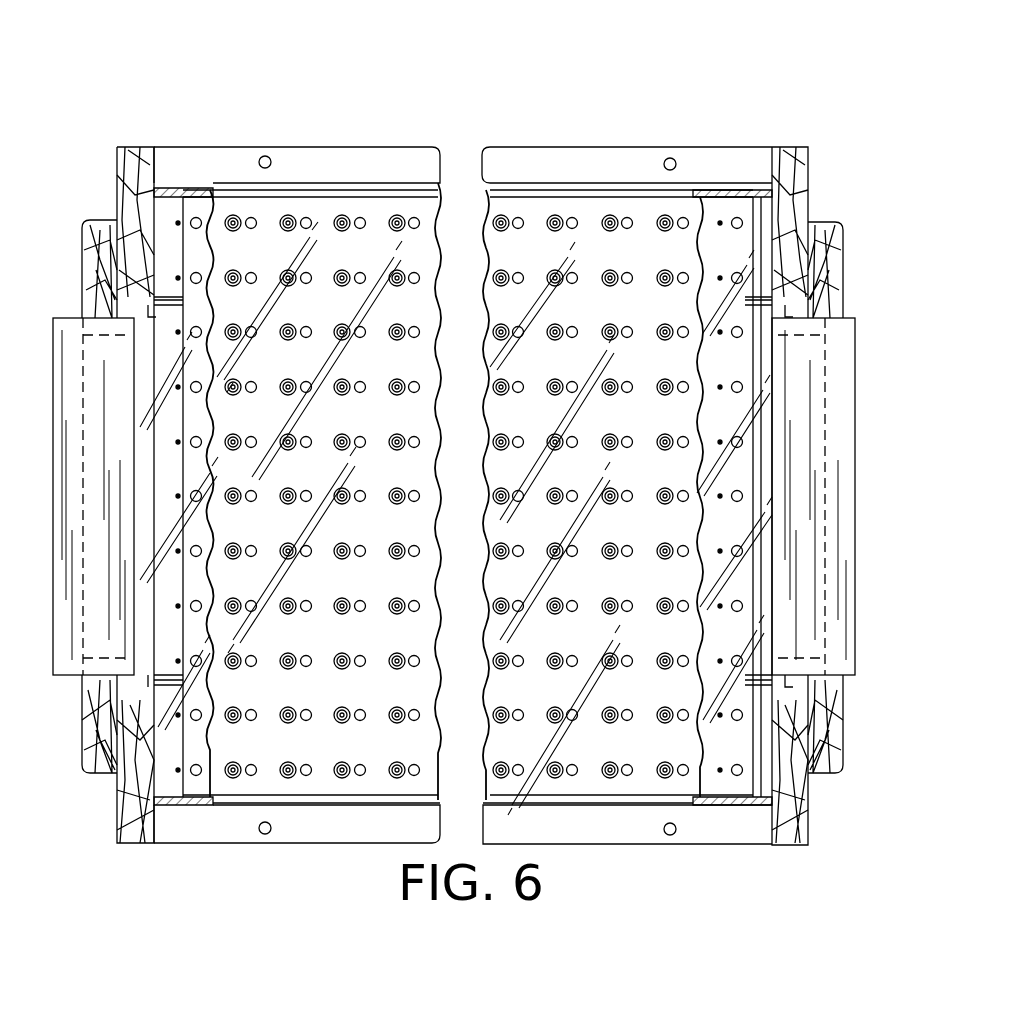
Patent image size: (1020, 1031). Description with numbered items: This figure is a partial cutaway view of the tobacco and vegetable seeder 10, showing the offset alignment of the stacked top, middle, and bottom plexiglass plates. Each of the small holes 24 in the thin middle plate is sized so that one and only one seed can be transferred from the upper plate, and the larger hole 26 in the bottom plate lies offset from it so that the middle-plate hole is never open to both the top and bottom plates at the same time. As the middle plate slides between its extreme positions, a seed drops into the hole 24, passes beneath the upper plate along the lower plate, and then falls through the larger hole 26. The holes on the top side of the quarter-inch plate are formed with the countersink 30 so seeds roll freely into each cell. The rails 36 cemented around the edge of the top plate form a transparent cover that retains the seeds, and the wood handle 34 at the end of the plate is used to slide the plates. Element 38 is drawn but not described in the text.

The tobacco and vegetable seeder 10 is at (626, 88).
The hole in the middle plate 24 is at (720, 220).
The larger hole in the bottom plate 26 is at (745, 225).
The countersink 30 is at (658, 216).
The wood handle 34 is at (842, 340).
The rails 36 is at (728, 162).
The vertical frame member 38 is at (796, 172).